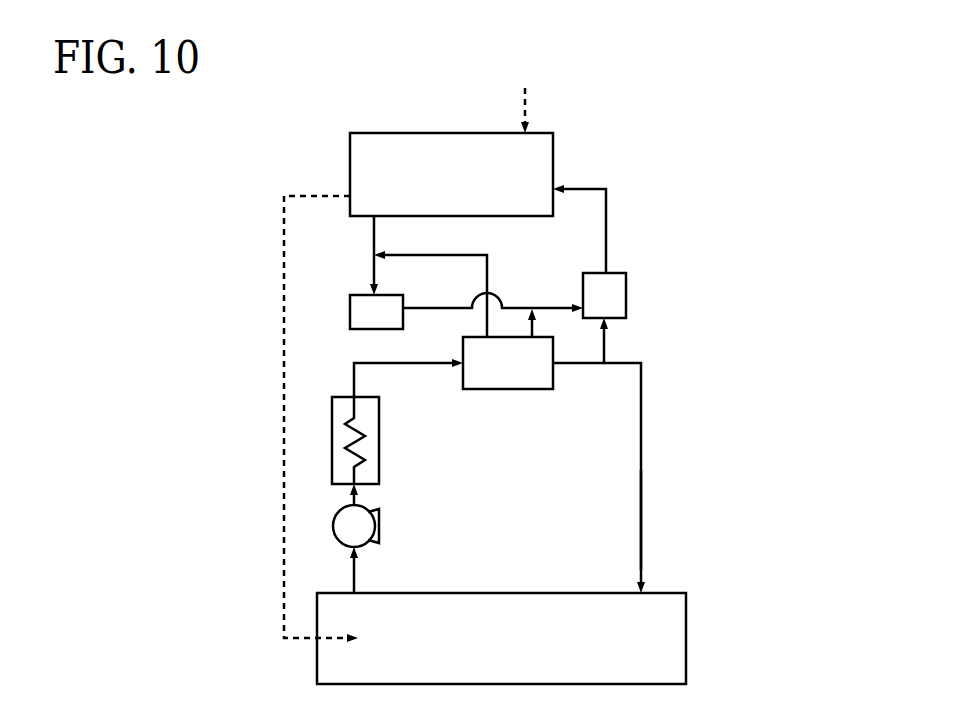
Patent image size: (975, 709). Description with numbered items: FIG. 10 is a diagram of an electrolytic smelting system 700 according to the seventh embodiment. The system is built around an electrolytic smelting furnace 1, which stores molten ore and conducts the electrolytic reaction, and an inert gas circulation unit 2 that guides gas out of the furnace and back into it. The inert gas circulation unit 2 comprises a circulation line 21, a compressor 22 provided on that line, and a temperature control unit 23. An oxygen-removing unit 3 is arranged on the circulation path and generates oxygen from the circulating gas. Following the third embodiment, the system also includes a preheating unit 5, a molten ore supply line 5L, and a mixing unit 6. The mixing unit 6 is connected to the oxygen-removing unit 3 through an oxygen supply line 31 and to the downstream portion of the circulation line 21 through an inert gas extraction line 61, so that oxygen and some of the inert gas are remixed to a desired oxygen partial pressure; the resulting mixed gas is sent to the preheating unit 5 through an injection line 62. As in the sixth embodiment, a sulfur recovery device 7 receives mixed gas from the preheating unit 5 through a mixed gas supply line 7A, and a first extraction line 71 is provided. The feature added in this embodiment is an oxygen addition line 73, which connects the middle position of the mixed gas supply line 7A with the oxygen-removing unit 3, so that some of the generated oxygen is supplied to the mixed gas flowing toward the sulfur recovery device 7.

The electrolytic smelting system 700 is at (192, 175).
The electrolytic smelting furnace 1 is at (696, 621).
The inert gas circulation unit 2 is at (651, 450).
The circulation line 21 is at (641, 520).
The compressor 22 is at (332, 525).
The temperature control unit 23 is at (332, 435).
The oxygen-removing unit 3 is at (513, 390).
The oxygen supply line 31 is at (528, 325).
The preheating unit 5 is at (562, 147).
The molten ore supply line 5L is at (284, 218).
The mixing unit 6 is at (626, 292).
The inert gas extraction line 61 is at (605, 340).
The injection line 62 is at (605, 255).
The sulfur recovery device 7 is at (338, 327).
The mixed gas supply line 7A is at (372, 236).
The first extraction line 71 is at (558, 310).
The oxygen addition line 73 is at (488, 273).